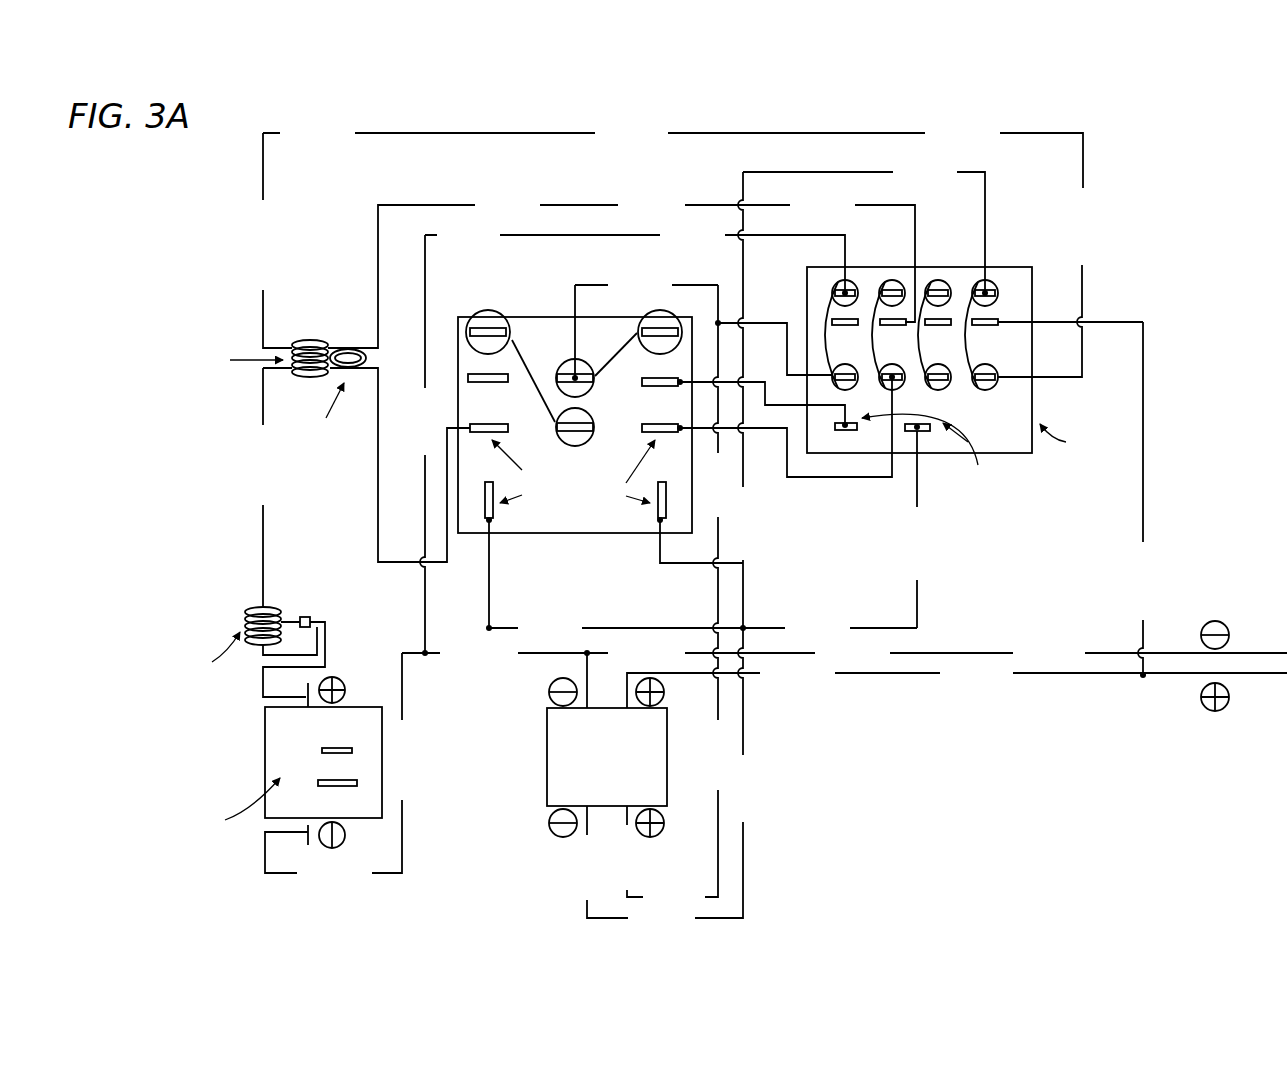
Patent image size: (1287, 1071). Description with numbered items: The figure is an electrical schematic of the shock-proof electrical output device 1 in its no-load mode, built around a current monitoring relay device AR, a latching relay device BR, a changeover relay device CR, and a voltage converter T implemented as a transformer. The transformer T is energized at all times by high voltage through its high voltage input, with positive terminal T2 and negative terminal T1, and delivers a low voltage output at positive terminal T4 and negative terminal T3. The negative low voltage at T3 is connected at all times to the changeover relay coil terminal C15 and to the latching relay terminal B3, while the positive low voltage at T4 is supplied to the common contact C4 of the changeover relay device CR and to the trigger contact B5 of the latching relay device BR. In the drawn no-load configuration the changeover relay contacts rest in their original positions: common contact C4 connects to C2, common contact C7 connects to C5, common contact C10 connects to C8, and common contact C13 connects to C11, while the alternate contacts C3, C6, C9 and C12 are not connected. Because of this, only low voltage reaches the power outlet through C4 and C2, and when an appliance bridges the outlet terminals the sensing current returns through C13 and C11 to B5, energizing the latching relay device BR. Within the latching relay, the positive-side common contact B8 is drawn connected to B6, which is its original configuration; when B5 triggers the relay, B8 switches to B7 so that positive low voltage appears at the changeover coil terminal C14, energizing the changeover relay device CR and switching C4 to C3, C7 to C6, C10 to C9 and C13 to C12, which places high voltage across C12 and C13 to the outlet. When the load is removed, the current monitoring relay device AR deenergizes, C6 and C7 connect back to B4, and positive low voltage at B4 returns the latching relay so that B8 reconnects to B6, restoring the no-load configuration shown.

The shock-proof electrical output device 1 is at (1157, 160).
The current monitoring relay device AR is at (192, 290).
The latching relay device BR is at (552, 314).
The changeover relay device CR is at (1000, 262).
The voltage converter T is at (542, 758).
The negative low voltage contact of latching relay device B3 is at (501, 507).
The latching relay contact B4 is at (617, 427).
The trigger button of latching relay device B5 is at (649, 507).
The latching relay contact B6 is at (622, 331).
The latching relay contact B7 is at (646, 383).
The latching relay common contact B8 is at (569, 371).
The changeover relay contact C2 is at (833, 288).
The changeover relay contact C3 is at (845, 332).
The common contact of third set of changeover relay device C4 is at (853, 385).
The changeover relay contact C5 is at (881, 288).
The changeover relay contact C6 is at (893, 332).
The changeover relay common contact C7 is at (900, 385).
The changeover relay contact C8 is at (947, 288).
The changeover relay contact C9 is at (938, 332).
The changeover relay common contact C10 is at (948, 387).
The changeover relay contact C11 is at (999, 288).
The changeover relay contact C12 is at (986, 332).
The changeover relay common contact C13 is at (999, 383).
The changeover relay coil terminal C14 is at (861, 436).
The changeover relay coil terminal C15 is at (931, 437).
The negative terminal of high voltage input T1 is at (598, 700).
The positive terminal of high voltage input T2 is at (618, 700).
The negative terminal of low voltage output T3 is at (598, 817).
The positive terminal of low voltage output T4 is at (618, 817).